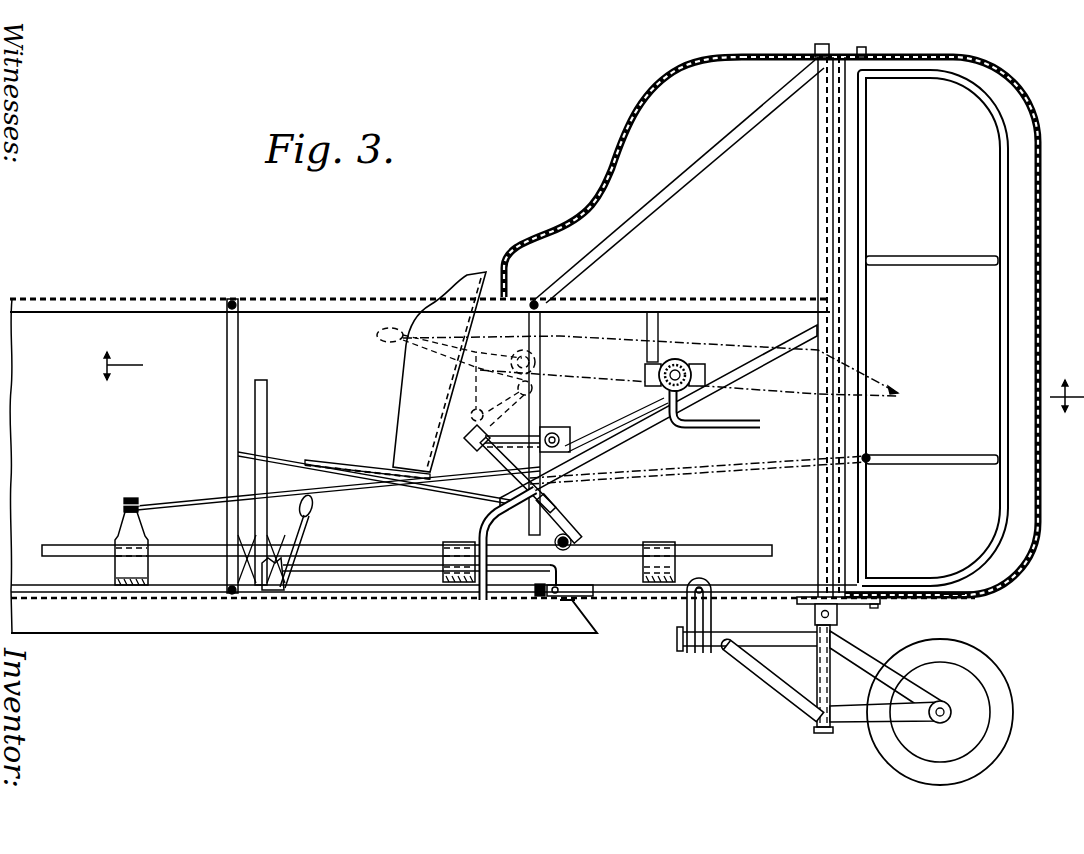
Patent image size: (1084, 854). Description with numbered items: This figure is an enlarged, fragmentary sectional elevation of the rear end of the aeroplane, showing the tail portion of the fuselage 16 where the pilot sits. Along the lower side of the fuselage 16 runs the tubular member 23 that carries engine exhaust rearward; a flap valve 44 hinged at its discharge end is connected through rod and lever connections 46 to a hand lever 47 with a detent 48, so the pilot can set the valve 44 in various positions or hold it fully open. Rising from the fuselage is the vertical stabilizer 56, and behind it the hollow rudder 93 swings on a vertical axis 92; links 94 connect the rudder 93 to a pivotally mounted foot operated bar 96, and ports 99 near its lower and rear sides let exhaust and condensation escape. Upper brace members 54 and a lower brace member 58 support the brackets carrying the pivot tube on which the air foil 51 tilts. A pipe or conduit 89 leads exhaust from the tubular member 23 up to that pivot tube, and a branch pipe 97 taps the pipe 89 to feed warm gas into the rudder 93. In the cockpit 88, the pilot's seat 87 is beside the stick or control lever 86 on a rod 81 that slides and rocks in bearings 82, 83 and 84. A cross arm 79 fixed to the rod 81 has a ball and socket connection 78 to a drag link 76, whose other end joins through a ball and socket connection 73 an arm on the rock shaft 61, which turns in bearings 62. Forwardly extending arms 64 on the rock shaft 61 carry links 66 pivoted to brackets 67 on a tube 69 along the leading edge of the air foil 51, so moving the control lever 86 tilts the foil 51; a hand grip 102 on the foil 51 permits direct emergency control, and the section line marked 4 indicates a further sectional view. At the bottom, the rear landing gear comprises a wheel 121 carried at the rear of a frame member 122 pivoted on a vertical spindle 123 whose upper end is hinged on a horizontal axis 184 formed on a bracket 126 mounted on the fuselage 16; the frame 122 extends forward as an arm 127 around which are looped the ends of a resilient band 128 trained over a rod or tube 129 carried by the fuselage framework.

The fuselage 16 is at (120, 299).
The tubular member 23 is at (162, 633).
The flap valve 44 is at (596, 631).
The vertical stabilizer 56 is at (639, 112).
The hollow rudder 93 is at (1013, 80).
The ports 99 is at (988, 592).
The vertical axis 92 is at (866, 51).
The upper brace members 54 is at (826, 52).
The cockpit 88 is at (280, 300).
The stick or control lever 86 is at (268, 380).
The pilot's seat 87 is at (350, 463).
The links 94 is at (189, 507).
The foot operated bar 96 is at (124, 504).
The bearing 82 is at (115, 540).
The rod 81 is at (383, 545).
The rod and lever connections 46 is at (565, 585).
The bearing 83 is at (445, 542).
The bearing 84 is at (658, 542).
The hand lever 47 is at (296, 540).
The detent 48 is at (270, 592).
The hand grip 102 is at (377, 335).
The air foil 51 is at (898, 392).
The tube 69 is at (520, 350).
The brackets 67 is at (517, 387).
The links 66 is at (497, 401).
The forwardly extending arms 64 is at (470, 416).
The pipe or conduit 89 is at (640, 437).
The ball and socket connections 73 is at (470, 445).
The ball and socket connection 78 is at (512, 436).
The cross arm 79 is at (556, 541).
The drag link 76 is at (505, 462).
The rock shaft 61 is at (553, 433).
The bearings 62 is at (583, 428).
The branch pipe 97 is at (728, 430).
The lower brace member 58 is at (680, 360).
The section line 4 is at (583, 382).
The rod or tube 129 is at (708, 588).
The resilient band 128 is at (684, 619).
The bracket 126 is at (808, 603).
The pivot 184 is at (838, 615).
The spindle 123 is at (815, 672).
The frame member 122 is at (860, 724).
The arm 127 is at (721, 653).
The wheel 121 is at (1005, 702).